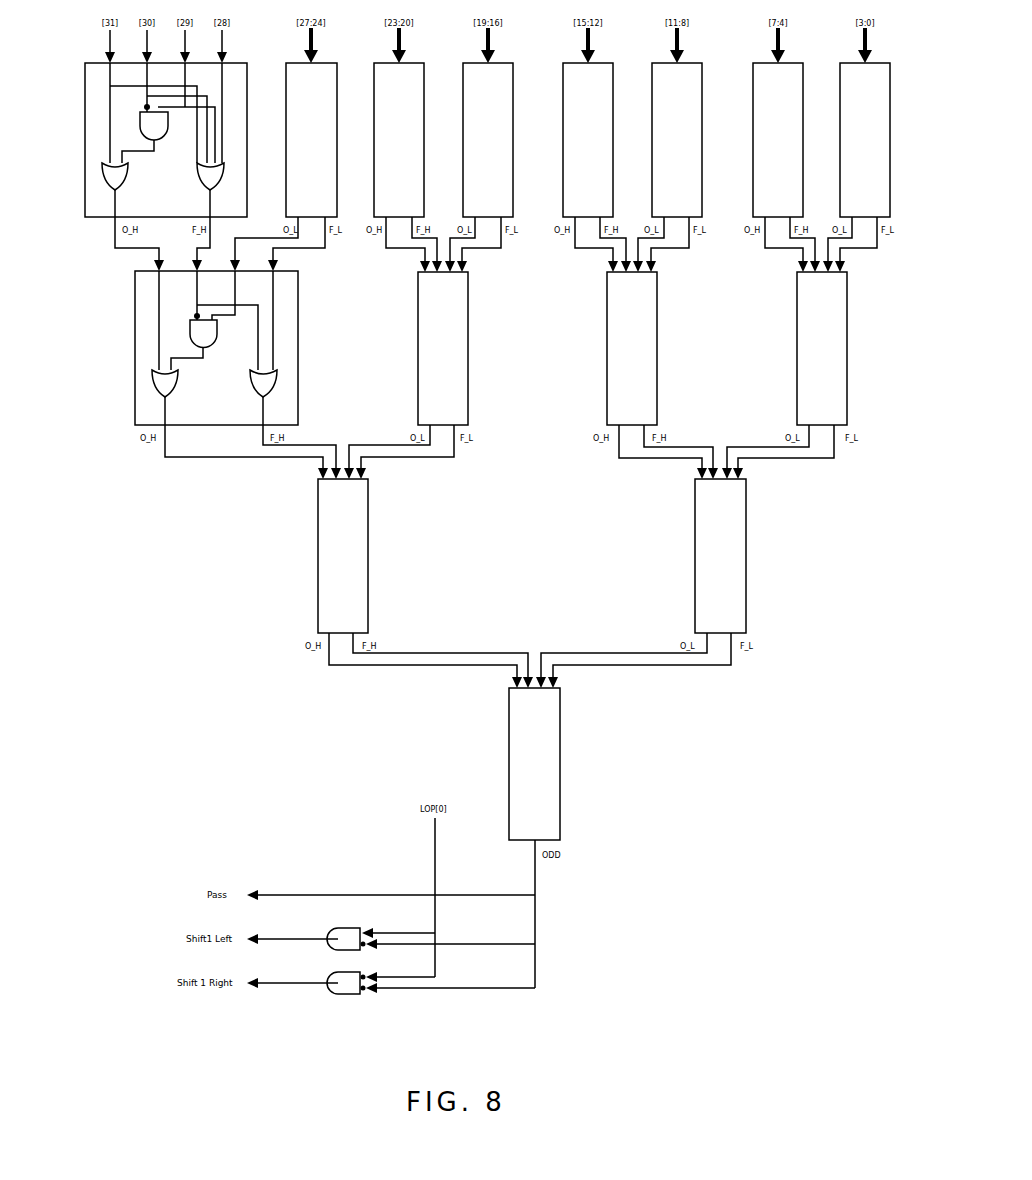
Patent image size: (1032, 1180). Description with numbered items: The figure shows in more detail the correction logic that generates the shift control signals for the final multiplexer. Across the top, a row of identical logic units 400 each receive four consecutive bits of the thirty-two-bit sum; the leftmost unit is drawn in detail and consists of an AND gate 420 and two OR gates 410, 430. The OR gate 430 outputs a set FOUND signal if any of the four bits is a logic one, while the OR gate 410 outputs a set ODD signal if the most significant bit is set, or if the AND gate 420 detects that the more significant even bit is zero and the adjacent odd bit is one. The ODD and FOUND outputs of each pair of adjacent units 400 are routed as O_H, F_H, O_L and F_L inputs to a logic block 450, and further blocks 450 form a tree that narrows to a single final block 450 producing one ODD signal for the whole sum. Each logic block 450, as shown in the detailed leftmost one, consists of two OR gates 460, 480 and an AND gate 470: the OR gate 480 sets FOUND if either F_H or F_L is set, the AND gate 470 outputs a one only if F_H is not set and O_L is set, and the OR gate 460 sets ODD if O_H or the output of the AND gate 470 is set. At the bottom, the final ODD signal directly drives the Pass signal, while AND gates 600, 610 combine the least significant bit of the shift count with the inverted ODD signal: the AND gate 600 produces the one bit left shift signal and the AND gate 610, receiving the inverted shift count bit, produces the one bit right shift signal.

The logic unit 400 is at (462, 140).
The OR gate 410 is at (127, 178).
The AND gate 420 is at (144, 115).
The OR gate 430 is at (224, 182).
The logic block 450 is at (461, 555).
The OR gate 460 is at (178, 379).
The AND gate 470 is at (217, 329).
The OR gate 480 is at (277, 382).
The AND gate 600 is at (342, 927).
The AND gate 610 is at (350, 994).